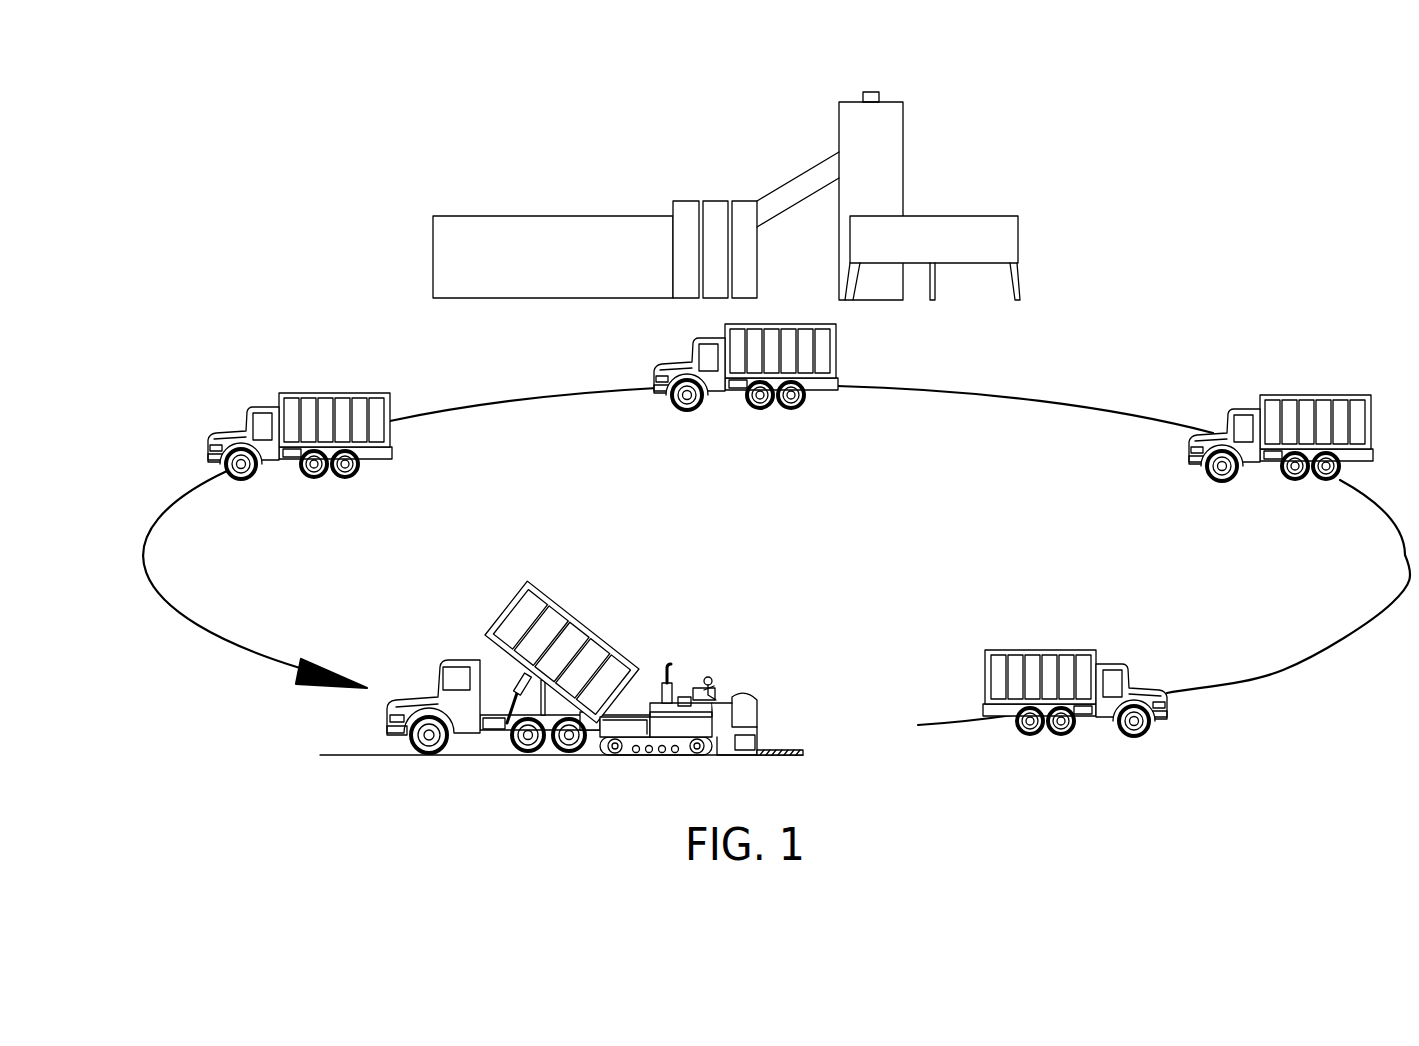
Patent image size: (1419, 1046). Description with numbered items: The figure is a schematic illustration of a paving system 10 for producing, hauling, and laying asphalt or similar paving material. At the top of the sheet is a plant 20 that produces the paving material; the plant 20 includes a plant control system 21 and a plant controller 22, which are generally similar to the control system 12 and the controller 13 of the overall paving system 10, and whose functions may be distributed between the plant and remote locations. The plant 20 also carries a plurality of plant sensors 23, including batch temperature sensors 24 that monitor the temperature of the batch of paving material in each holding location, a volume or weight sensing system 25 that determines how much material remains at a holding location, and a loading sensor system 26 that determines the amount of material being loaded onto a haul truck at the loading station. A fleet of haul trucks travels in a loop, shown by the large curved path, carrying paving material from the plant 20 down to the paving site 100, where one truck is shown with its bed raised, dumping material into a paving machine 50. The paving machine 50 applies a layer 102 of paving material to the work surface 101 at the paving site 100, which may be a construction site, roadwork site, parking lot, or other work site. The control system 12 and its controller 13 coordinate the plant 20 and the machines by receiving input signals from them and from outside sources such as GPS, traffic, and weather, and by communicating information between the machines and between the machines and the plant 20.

The paving system 10 is at (236, 252).
The control system 12 is at (269, 230).
The controller 13 is at (301, 212).
The plant 20 is at (504, 180).
The plant control system 21 is at (542, 172).
The plant controller 22 is at (580, 168).
The plant sensors 23 is at (635, 168).
The batch temperature sensors 24 is at (694, 172).
The volume or weight sensing system 25 is at (731, 168).
The loading sensor system 26 is at (767, 168).
The paving machine 50 is at (706, 661).
The paving site 100 is at (393, 781).
The work surface 101 is at (353, 753).
The layer 102 is at (790, 752).